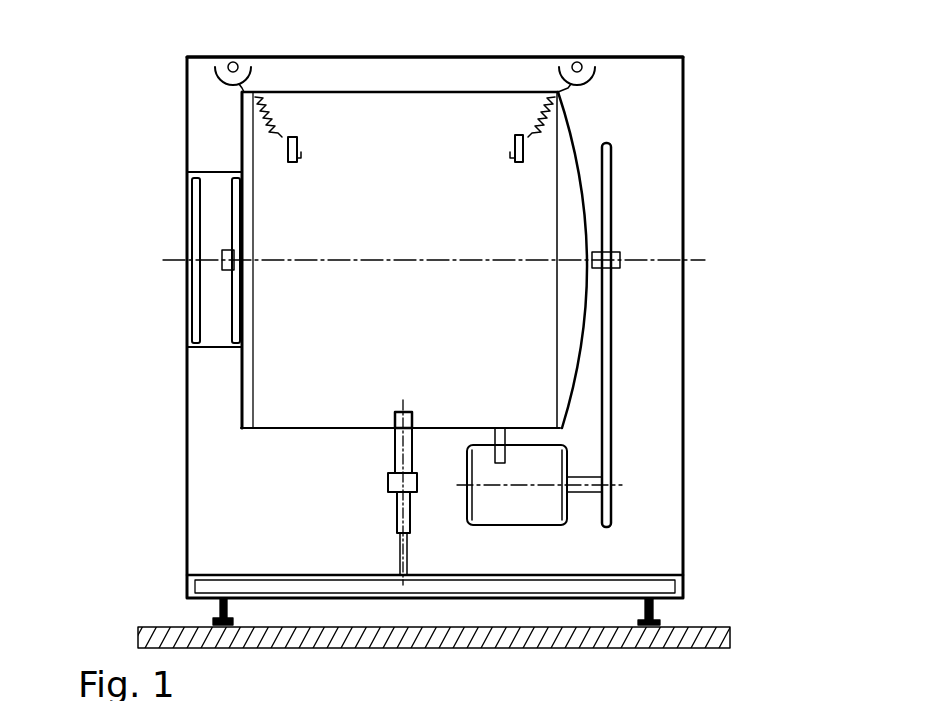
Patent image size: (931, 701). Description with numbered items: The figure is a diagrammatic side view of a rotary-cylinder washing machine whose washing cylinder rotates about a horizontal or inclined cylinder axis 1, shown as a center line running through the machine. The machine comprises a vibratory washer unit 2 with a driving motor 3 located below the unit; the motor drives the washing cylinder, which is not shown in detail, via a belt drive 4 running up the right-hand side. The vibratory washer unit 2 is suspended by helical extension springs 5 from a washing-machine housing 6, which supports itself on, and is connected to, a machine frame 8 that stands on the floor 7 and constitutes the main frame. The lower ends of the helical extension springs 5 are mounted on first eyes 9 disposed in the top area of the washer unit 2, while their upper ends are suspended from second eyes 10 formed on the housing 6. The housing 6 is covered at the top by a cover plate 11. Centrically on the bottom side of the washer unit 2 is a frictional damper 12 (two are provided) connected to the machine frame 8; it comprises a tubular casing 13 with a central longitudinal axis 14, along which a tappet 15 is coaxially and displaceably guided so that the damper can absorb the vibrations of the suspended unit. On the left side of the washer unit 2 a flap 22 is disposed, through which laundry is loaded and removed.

The cylinder axis 1 is at (210, 262).
The vibratory washer unit 2 is at (578, 162).
The driving motor 3 is at (552, 505).
The belt drive 4 is at (605, 407).
The helical extension springs 5 is at (262, 120).
The washing-machine housing 6 is at (187, 370).
The floor 7 is at (165, 625).
The machine frame 8 is at (190, 588).
The first eyes 9 is at (288, 150).
The second eyes 10 is at (226, 68).
The cover plate 11 is at (262, 57).
The frictional damper 12 is at (394, 507).
The tubular casing 13 is at (395, 535).
The central longitudinal axis 14 is at (390, 465).
The tappet 15 is at (395, 443).
The flap 22 is at (192, 212).